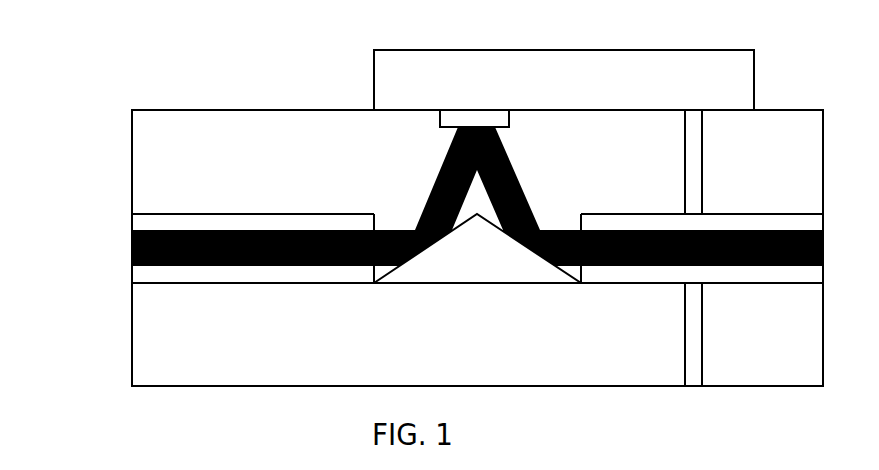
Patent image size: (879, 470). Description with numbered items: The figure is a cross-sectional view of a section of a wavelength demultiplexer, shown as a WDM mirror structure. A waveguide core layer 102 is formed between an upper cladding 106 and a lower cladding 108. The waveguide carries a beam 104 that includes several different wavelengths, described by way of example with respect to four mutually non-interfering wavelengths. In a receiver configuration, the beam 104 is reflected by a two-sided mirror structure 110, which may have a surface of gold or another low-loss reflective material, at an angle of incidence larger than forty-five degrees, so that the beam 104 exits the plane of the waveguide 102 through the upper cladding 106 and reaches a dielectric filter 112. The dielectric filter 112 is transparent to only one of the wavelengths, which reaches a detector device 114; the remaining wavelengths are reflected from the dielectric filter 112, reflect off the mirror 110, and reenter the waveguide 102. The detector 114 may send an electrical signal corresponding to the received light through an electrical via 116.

The waveguide core layer 102 is at (132, 220).
The beam 104 is at (132, 254).
The upper cladding 106 is at (132, 158).
The lower cladding 108 is at (132, 331).
The two-sided mirror structure 110 is at (477, 284).
The dielectric filter 112 is at (441, 127).
The detector device 114 is at (374, 76).
The electrical via 116 is at (685, 337).